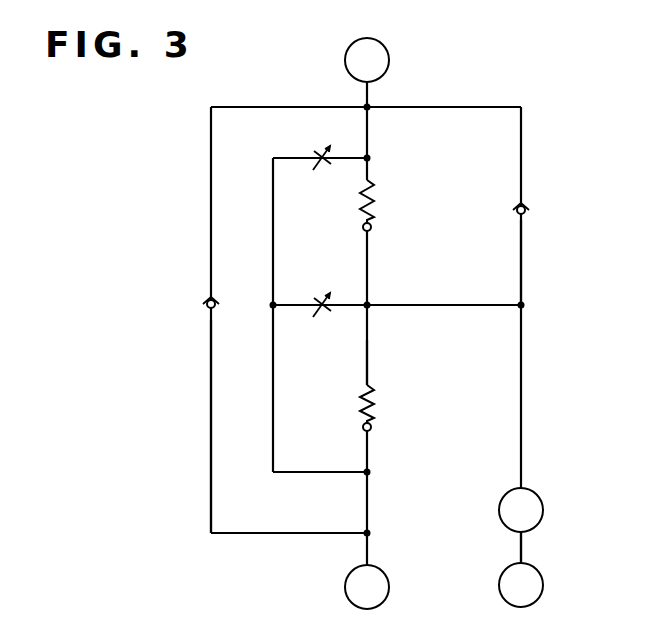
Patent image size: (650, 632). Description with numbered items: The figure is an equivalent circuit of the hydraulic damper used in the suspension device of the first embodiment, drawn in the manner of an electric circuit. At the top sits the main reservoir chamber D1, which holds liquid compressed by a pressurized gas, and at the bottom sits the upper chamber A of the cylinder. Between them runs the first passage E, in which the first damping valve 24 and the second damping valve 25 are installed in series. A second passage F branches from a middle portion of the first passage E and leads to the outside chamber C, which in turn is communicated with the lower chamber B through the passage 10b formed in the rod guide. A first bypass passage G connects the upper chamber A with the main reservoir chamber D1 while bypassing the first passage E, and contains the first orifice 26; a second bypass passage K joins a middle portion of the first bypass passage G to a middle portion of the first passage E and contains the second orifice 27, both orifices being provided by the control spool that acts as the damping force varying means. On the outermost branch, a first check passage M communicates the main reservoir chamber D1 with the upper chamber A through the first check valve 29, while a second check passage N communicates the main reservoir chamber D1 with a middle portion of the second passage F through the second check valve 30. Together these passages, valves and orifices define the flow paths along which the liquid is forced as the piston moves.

The first damping valve 24 is at (372, 424).
The second damping valve 25 is at (372, 214).
The first orifice 26 is at (319, 154).
The second orifice 27 is at (321, 300).
The first check valve 29 is at (205, 307).
The second check valve 30 is at (527, 210).
The passage 10b is at (521, 548).
The main reservoir chamber D1 is at (367, 60).
The upper chamber A is at (367, 587).
The lower chamber B is at (521, 585).
The outside chamber C is at (521, 510).
The first passage E is at (367, 368).
The second passage F is at (486, 306).
The first bypass passage G is at (302, 473).
The second bypass passage K is at (343, 309).
The first check passage M is at (211, 442).
The second check passage N is at (521, 270).